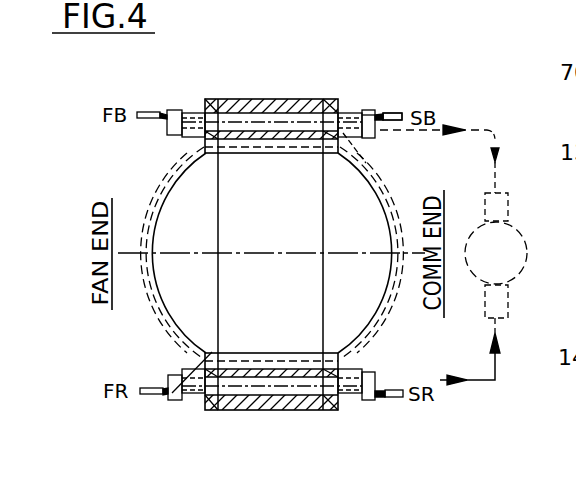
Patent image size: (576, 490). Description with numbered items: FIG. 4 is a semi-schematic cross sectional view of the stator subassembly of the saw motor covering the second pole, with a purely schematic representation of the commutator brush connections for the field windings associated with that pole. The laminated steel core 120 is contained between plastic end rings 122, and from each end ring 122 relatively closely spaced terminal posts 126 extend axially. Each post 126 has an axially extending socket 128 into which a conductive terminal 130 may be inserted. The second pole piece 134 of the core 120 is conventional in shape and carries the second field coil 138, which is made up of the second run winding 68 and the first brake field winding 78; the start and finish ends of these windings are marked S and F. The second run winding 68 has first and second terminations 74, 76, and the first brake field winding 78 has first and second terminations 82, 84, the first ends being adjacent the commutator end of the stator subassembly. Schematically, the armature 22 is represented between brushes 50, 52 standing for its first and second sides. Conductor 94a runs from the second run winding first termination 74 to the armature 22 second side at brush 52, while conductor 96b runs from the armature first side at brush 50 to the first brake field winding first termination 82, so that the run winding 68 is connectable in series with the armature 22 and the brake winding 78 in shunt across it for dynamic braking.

The laminated steel core 120 is at (278, 98).
The end rings 122 is at (207, 98).
The terminal posts 126 is at (193, 114).
The second termination of first brake field winding 84 is at (164, 97).
The first termination of first brake field winding 82 is at (383, 99).
The second termination of second run winding 76 is at (173, 407).
The first termination of second run winding 74 is at (387, 410).
The conductive terminal 130 is at (403, 112).
The socket 128 is at (371, 137).
The second run winding 68 is at (162, 207).
The first brake field winding 78 is at (177, 172).
The second field coil 138 is at (407, 191).
The second pole piece 134 is at (293, 233).
The conductor 96b is at (505, 128).
The brush 50 is at (509, 201).
The armature 22 is at (530, 232).
The brush 52 is at (510, 298).
The conductor 94a is at (495, 368).